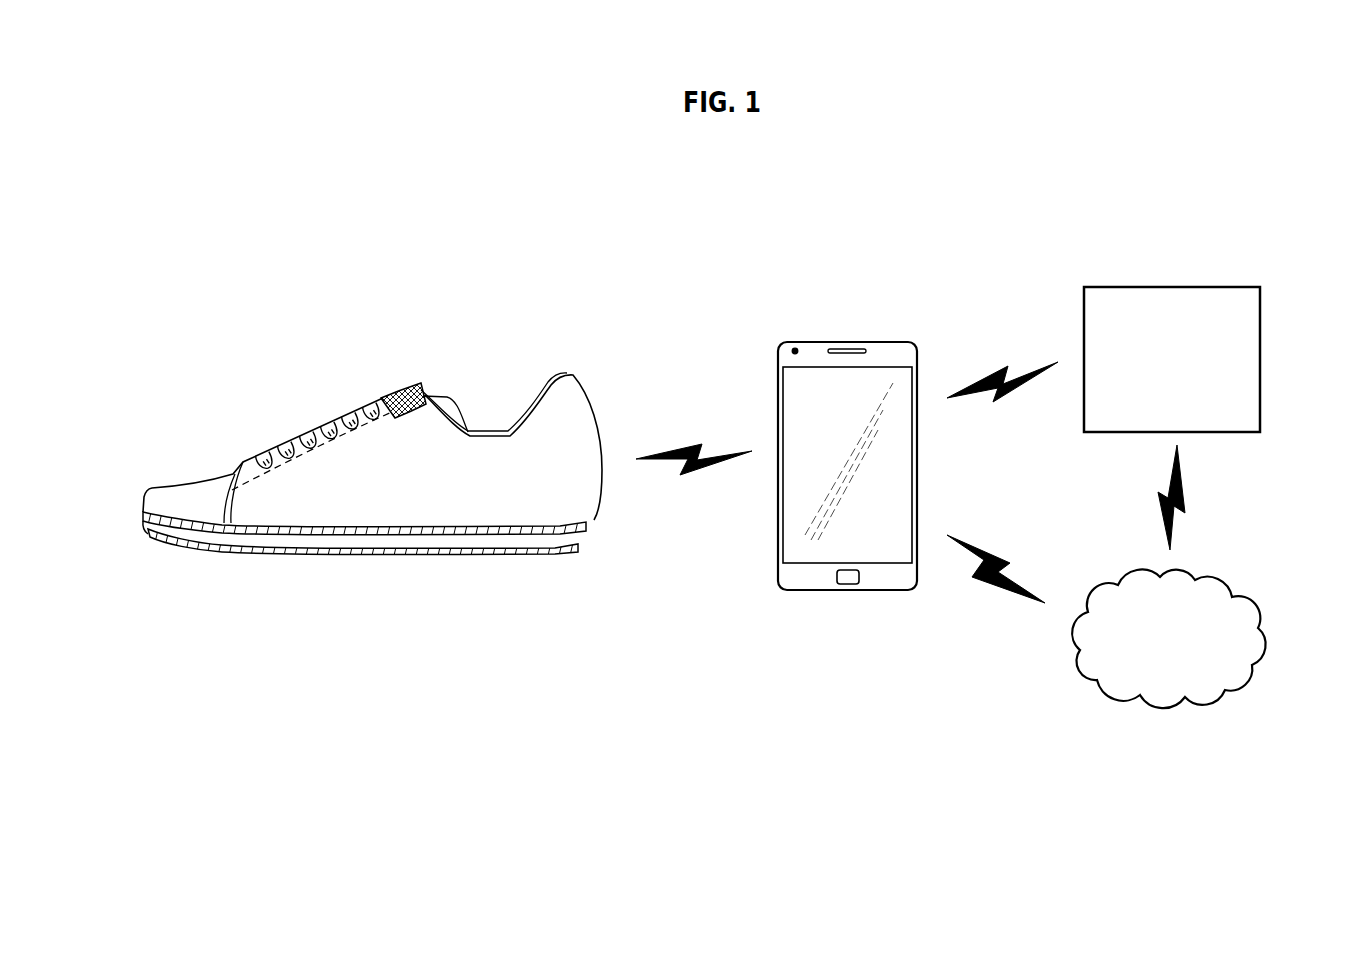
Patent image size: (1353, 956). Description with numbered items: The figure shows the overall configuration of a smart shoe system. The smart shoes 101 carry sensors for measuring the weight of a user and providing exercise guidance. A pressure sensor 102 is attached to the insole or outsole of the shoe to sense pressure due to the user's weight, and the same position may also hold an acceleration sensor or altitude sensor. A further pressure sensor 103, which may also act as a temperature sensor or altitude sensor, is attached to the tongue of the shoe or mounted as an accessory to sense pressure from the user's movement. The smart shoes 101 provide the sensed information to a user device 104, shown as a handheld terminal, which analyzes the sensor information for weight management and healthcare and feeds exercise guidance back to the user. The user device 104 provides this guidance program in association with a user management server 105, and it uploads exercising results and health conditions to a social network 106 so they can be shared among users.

The smart shoes 101 is at (575, 383).
The pressure sensor 102 is at (585, 535).
The pressure sensor 103 is at (412, 383).
The user device 104 is at (848, 342).
The user management server 105 is at (1172, 287).
The social network 106 is at (1175, 700).